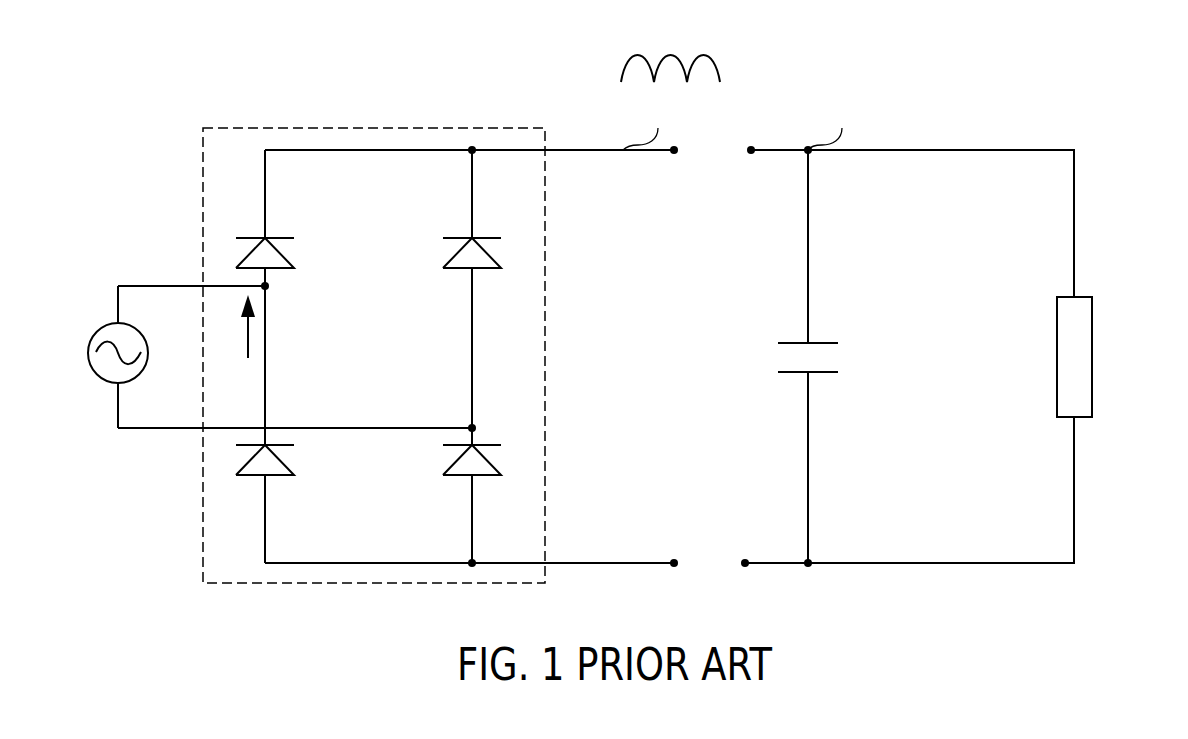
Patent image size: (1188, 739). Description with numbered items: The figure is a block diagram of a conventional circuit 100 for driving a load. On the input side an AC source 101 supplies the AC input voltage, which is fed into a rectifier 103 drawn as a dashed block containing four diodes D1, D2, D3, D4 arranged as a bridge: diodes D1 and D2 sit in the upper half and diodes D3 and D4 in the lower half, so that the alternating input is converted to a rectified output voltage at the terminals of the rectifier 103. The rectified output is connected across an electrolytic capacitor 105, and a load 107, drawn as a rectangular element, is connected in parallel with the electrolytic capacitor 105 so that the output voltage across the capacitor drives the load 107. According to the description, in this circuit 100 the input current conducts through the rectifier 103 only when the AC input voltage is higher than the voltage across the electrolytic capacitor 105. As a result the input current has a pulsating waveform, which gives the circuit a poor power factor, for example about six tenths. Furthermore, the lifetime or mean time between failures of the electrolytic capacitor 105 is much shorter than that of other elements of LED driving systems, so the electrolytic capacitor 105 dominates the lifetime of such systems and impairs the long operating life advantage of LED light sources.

The circuit 100 is at (270, 97).
The AC input voltage source 101 is at (90, 348).
The rectifier 103 is at (398, 327).
The electrolytic capacitor 105 is at (823, 343).
The load 107 is at (1087, 297).
The diode D1 is at (284, 256).
The diode D2 is at (491, 256).
The diode D3 is at (282, 462).
The diode D4 is at (489, 462).